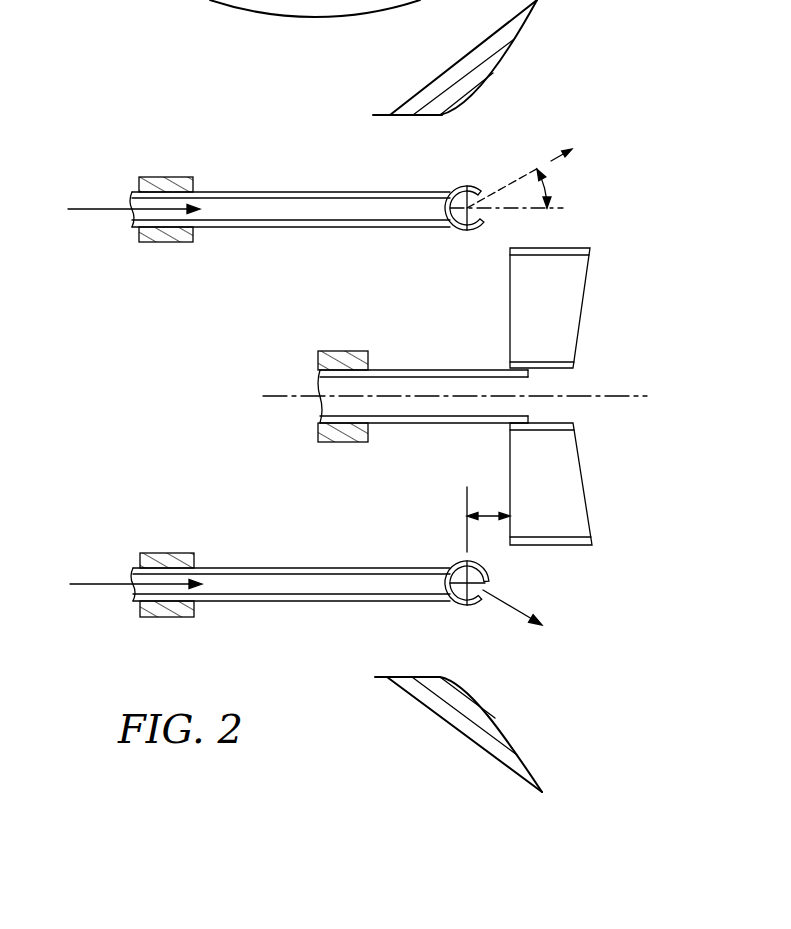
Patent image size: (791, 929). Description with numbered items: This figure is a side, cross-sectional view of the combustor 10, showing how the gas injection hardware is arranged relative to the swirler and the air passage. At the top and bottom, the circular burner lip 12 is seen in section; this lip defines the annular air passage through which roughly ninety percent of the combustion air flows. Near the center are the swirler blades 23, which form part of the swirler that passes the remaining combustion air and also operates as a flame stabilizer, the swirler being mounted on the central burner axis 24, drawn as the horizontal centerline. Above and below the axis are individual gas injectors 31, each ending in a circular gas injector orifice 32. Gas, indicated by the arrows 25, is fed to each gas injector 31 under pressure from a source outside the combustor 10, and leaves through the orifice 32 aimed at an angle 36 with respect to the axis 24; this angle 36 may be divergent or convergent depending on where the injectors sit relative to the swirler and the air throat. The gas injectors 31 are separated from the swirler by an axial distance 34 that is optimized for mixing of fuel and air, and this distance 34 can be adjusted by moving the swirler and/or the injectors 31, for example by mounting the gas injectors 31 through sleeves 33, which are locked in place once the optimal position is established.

The combustor 10 is at (658, 272).
The circular burner lip 12 is at (513, 40).
The swirler blades 23 is at (560, 297).
The central burner axis 24 is at (623, 397).
The gas flow arrows 25 is at (99, 210).
The gas injector 31 is at (272, 192).
The circular gas injector orifice 32 is at (488, 206).
The sleeve 33 is at (168, 242).
The axial distance 34 is at (492, 515).
The angle 36 is at (550, 182).